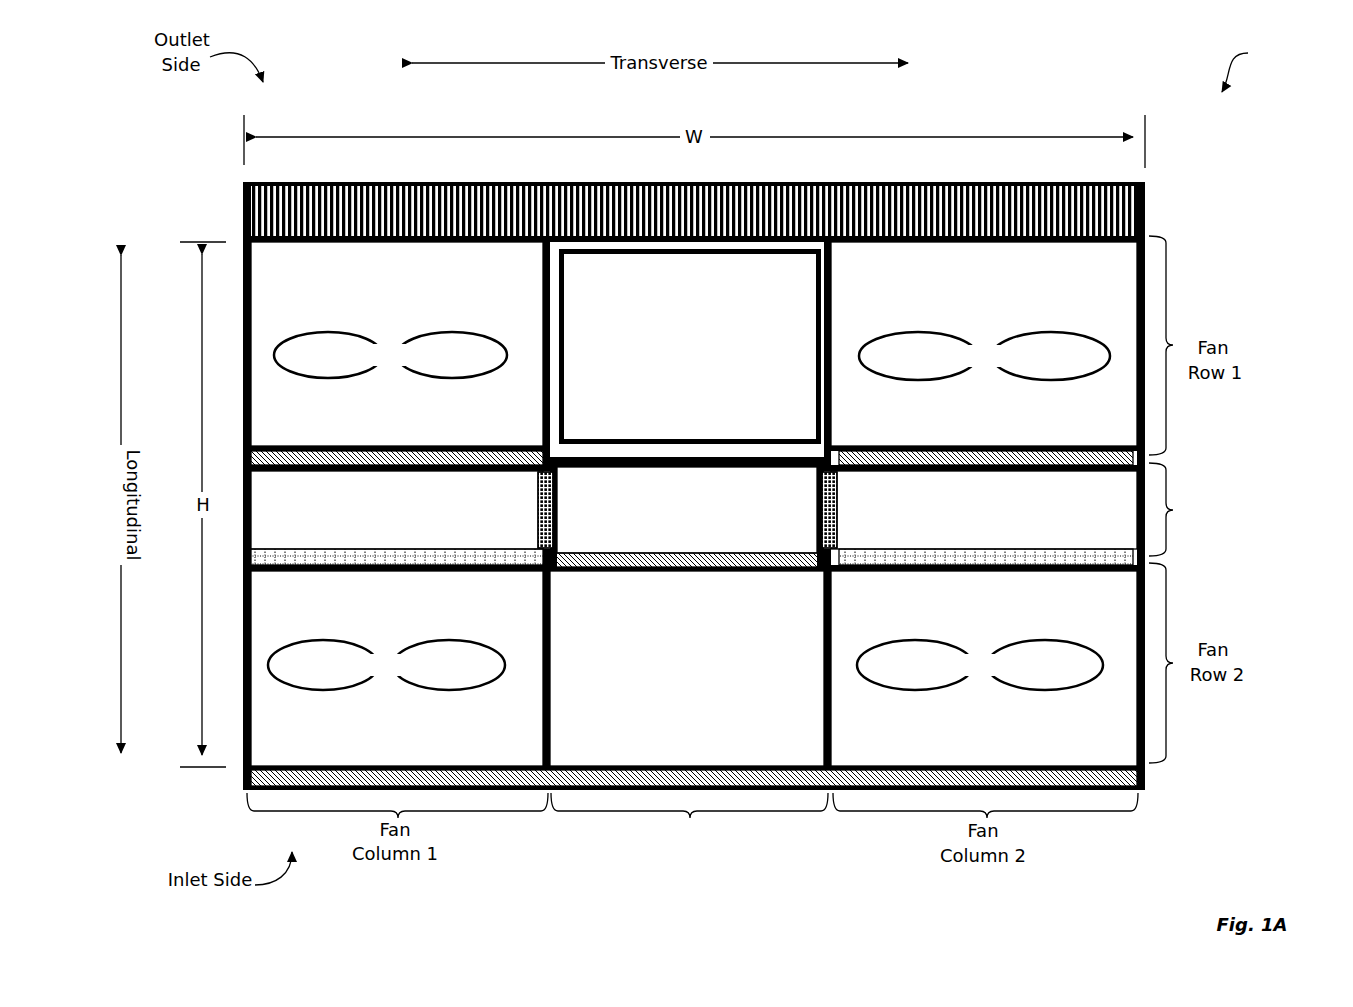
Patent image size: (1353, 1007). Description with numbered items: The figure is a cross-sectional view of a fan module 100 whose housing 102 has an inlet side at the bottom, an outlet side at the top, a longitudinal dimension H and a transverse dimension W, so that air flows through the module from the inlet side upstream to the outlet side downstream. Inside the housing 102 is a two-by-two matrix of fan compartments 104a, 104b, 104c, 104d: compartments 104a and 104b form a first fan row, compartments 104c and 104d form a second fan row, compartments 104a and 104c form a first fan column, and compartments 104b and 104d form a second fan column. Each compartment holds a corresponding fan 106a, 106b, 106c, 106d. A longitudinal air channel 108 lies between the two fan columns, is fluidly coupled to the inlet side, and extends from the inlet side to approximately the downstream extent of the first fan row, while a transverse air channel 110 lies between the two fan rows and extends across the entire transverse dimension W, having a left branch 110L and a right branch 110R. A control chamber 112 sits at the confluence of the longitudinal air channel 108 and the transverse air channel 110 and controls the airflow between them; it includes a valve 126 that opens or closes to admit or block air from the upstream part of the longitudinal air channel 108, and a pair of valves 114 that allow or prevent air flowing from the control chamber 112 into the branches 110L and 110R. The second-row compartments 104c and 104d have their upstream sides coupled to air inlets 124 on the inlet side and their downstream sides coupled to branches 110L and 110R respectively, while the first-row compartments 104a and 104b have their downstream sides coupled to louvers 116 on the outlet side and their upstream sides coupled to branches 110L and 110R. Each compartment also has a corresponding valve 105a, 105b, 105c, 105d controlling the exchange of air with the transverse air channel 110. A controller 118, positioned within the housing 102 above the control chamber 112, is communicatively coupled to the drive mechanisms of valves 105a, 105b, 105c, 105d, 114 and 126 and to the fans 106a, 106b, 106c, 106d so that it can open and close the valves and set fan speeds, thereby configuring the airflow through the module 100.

The fan module 100 is at (1258, 68).
The housing 102 is at (252, 292).
The fan compartment 104a is at (374, 423).
The fan compartment 104b is at (964, 422).
The fan compartment 104c is at (370, 745).
The fan compartment 104d is at (962, 737).
The valve 105a is at (308, 473).
The valve 105b is at (1053, 472).
The valve 105c is at (309, 549).
The valve 105d is at (1060, 549).
The fan 106a is at (390, 355).
The fan 106b is at (984, 356).
The fan 106c is at (386, 665).
The fan 106d is at (980, 665).
The longitudinal air channel 108 is at (675, 673).
The transverse air channel 110 is at (1225, 509).
The left branch of transverse air channel 110L is at (366, 517).
The right branch of transverse air channel 110R is at (964, 517).
The control chamber 112 is at (687, 510).
The valves 114 is at (536, 518).
The louvers 116 is at (1000, 217).
The controller 118 is at (690, 347).
The air inlets 124 is at (434, 771).
The valve 126 is at (703, 571).